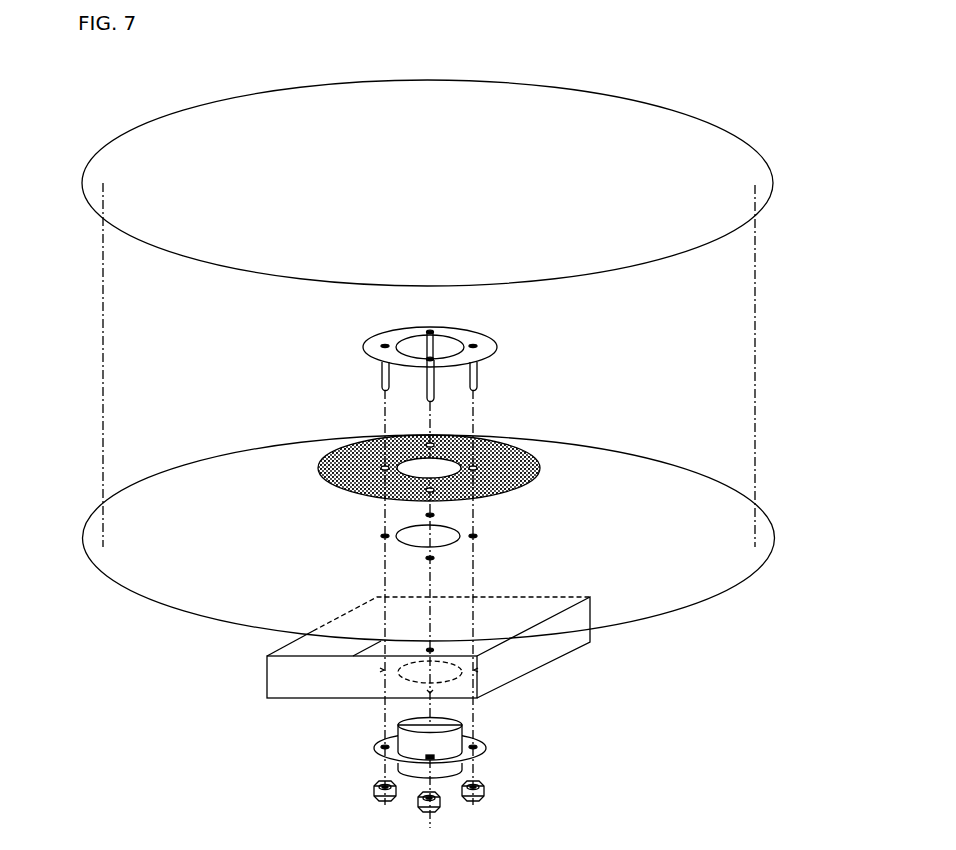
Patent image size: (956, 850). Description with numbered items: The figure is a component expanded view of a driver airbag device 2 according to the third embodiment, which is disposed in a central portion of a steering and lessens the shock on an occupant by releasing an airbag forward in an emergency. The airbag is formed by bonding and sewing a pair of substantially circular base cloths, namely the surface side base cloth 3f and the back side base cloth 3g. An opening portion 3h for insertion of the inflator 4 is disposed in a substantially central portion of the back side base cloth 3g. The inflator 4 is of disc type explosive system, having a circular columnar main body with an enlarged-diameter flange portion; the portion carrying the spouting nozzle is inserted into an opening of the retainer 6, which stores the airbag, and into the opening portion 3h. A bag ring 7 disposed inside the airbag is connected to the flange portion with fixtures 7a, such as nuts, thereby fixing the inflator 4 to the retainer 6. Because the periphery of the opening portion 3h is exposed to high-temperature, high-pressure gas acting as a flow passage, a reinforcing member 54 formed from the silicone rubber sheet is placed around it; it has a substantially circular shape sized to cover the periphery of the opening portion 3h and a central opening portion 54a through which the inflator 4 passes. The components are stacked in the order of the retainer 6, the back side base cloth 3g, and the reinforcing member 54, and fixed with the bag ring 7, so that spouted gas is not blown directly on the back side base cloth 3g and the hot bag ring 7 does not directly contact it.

The airbag device 2 is at (428, 437).
The surface side base cloth 3f is at (433, 83).
The back side base cloth 3g is at (624, 456).
The bag ring 7 is at (363, 348).
The reinforcing member 54 is at (409, 476).
The opening portion 54a is at (458, 472).
The opening portion 3h is at (458, 540).
The retainer 6 is at (268, 676).
The inflator 4 is at (374, 745).
The fixtures 7a is at (373, 790).